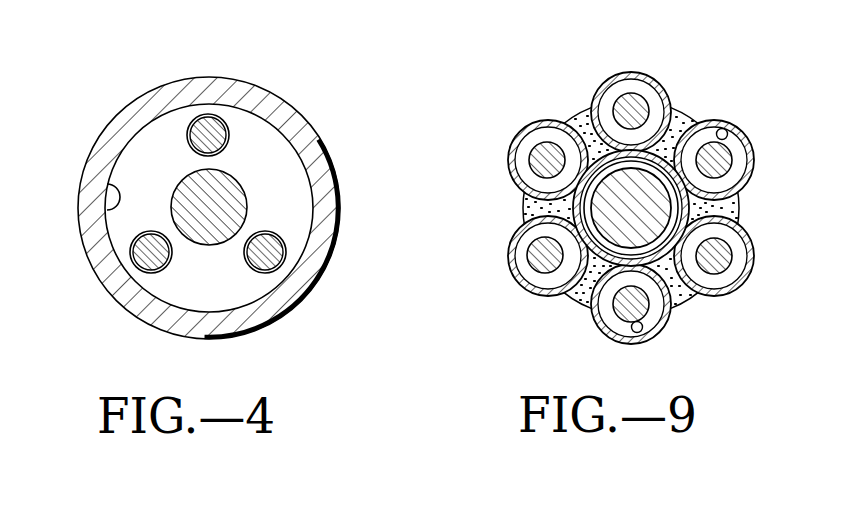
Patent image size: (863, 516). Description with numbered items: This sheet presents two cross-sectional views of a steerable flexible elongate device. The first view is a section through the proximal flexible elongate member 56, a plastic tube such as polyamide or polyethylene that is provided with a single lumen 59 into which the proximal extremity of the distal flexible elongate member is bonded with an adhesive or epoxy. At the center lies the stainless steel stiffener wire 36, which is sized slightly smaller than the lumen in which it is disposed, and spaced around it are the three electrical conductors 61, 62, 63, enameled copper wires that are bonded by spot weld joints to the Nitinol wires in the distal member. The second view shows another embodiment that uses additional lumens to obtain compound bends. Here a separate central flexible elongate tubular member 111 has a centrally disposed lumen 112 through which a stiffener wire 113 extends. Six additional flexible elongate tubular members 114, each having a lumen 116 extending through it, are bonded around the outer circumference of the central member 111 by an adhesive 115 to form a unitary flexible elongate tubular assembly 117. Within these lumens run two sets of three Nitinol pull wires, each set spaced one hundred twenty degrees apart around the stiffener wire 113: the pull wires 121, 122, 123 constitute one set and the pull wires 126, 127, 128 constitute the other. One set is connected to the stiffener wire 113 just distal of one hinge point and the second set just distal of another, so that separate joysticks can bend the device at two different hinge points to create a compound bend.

In FIG. 4, the stiffener wire 36 is at (211, 207).
In FIG. 4, the flexible elongate member 56 is at (174, 95).
In FIG. 4, the single lumen 59 is at (107, 185).
In FIG. 4, the electrical conductor 61 is at (210, 118).
In FIG. 4, the electrical conductor 62 is at (270, 257).
In FIG. 4, the electrical conductor 63 is at (145, 262).
In FIG. 9, the flexible elongate tubular member 111 is at (576, 208).
In FIG. 9, the centrally disposed lumen 112 is at (689, 209).
In FIG. 9, the stiffener wire 113 is at (633, 207).
In FIG. 9, the flexible elongate tubular members 114 is at (596, 96).
In FIG. 9, the adhesive 115 is at (565, 318).
In FIG. 9, the lumens 116 is at (724, 129).
In FIG. 9, the flexible elongate tubular assembly 117 is at (450, 73).
In FIG. 9, the pull wire 121 is at (628, 108).
In FIG. 9, the pull wire 122 is at (724, 248).
In FIG. 9, the pull wire 123 is at (532, 256).
In FIG. 9, the pull wire 126 is at (718, 162).
In FIG. 9, the pull wire 127 is at (645, 304).
In FIG. 9, the pull wire 128 is at (540, 157).